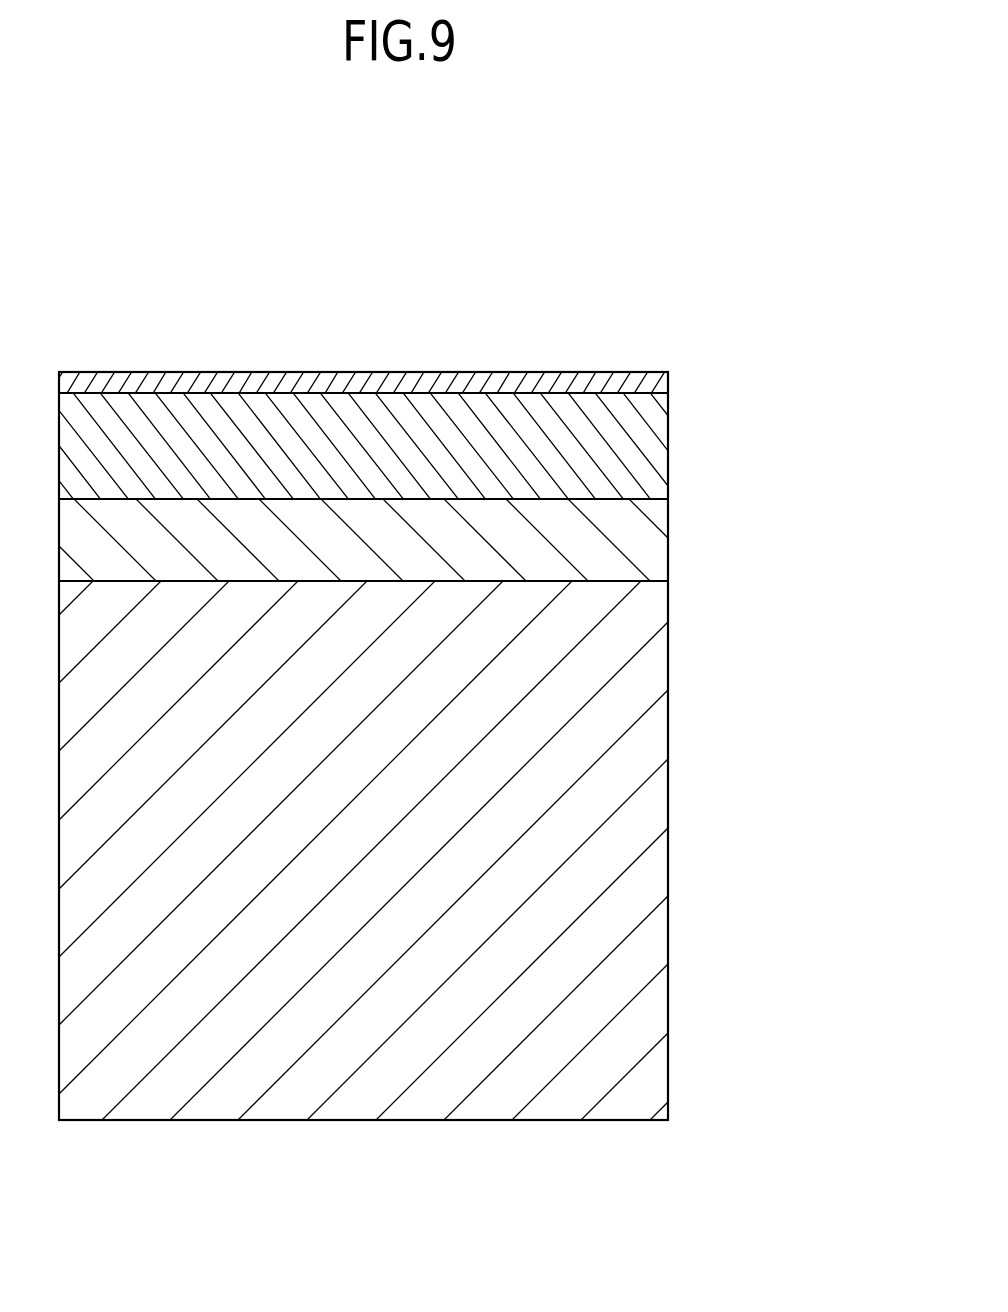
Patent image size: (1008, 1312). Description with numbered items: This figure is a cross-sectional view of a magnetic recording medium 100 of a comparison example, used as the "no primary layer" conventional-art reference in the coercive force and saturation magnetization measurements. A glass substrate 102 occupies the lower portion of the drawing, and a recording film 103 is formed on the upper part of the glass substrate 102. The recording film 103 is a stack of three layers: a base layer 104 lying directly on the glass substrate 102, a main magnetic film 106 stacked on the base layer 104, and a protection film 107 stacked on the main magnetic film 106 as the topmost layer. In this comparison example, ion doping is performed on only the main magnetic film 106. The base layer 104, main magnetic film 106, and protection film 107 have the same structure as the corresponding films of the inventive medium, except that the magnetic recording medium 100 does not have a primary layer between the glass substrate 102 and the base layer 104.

The magnetic recording medium 100 is at (120, 245).
The glass substrate 102 is at (650, 793).
The multilayer film 103 is at (457, 472).
The base layer 104 is at (650, 548).
The main magnetic film 106 is at (650, 445).
The protection film 107 is at (426, 382).